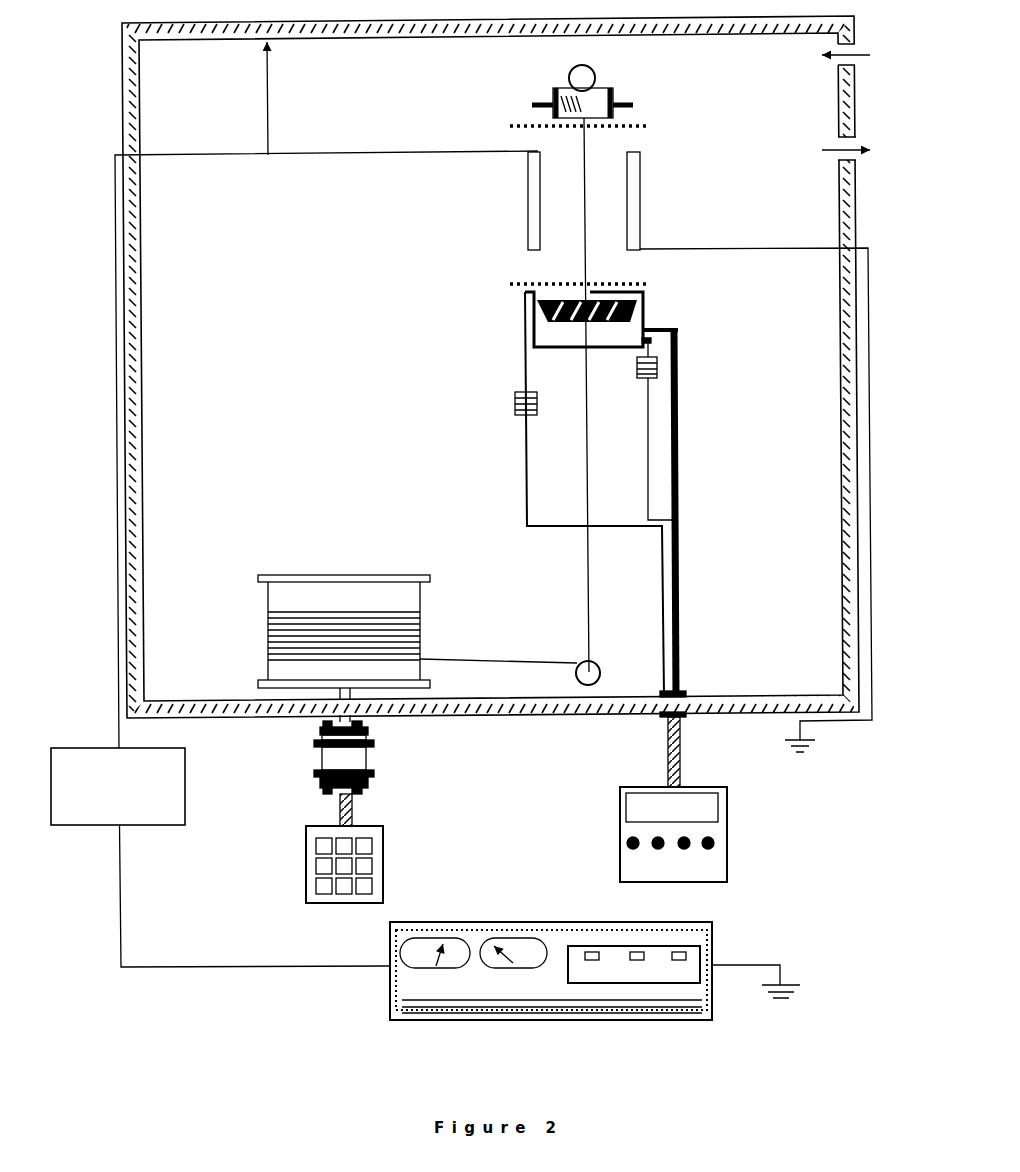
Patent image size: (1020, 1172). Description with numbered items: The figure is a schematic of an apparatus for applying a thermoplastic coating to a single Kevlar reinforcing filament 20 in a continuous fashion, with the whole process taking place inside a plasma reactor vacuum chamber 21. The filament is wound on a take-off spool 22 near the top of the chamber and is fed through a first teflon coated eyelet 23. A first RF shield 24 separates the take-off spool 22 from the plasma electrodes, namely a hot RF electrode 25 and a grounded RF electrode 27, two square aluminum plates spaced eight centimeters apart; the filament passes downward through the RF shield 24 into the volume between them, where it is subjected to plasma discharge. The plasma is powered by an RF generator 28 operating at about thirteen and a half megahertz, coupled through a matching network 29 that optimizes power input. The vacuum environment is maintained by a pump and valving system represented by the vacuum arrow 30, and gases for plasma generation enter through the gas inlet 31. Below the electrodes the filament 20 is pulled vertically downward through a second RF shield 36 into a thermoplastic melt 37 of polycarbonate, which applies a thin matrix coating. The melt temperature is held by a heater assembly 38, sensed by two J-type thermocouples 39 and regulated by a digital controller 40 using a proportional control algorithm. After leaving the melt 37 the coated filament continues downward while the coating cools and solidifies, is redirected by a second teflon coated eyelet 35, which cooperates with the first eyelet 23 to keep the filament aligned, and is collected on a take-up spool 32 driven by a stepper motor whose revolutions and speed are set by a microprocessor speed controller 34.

The reinforcing filament 20 is at (594, 141).
The vacuum chamber 21 is at (118, 107).
The take-off spool 22 is at (528, 105).
The teflon coated eyelet 23 is at (600, 78).
The RF shield 24 is at (656, 126).
The hot RF electrode 25 is at (525, 195).
The grounded RF electrode 27 is at (643, 195).
The RF generator 28 is at (386, 944).
The matching network 29 is at (220, 857).
The vacuum arrow 30 is at (795, 153).
The gas inlet 31 is at (868, 59).
The take-up spool 32 is at (288, 570).
The microprocessor speed controller 34 is at (395, 864).
The second teflon coated eyelet 35 is at (378, 757).
The second RF shield 36 is at (656, 284).
The thermoplastic melt 37 is at (536, 312).
The heater assembly 38 is at (621, 333).
The thermocouples 39 is at (510, 398).
The digital controller 40 is at (734, 834).